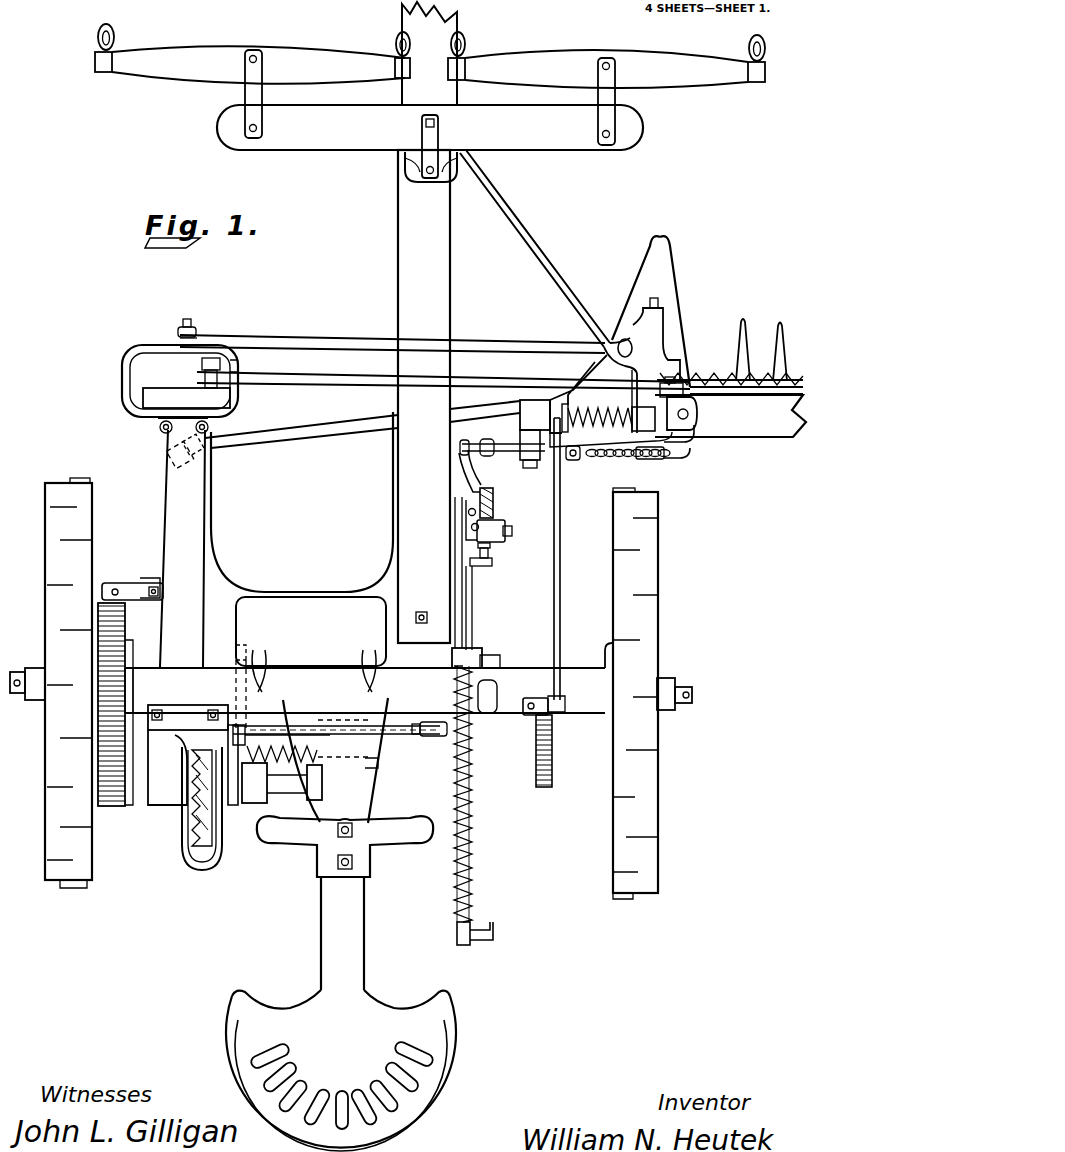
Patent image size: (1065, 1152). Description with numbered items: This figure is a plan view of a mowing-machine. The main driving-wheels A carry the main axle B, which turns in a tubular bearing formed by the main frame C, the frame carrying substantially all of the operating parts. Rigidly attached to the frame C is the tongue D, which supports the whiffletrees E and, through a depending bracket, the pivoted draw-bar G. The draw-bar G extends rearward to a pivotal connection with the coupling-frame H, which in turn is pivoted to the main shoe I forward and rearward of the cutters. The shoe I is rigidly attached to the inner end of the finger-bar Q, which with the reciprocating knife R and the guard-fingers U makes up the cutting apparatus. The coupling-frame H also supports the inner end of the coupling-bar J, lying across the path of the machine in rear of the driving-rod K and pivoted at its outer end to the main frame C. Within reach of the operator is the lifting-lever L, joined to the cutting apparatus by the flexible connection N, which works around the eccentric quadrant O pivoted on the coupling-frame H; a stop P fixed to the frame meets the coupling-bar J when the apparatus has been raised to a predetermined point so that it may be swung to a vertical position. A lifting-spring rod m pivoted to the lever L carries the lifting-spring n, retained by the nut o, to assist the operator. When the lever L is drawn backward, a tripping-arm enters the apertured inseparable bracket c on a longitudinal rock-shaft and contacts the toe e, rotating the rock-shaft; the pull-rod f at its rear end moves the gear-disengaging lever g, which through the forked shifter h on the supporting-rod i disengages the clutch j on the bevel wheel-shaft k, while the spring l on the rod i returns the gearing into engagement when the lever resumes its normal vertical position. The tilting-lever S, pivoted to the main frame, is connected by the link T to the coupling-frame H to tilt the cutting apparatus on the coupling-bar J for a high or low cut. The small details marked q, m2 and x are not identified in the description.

The whiffletrees E is at (430, 101).
The tongue D is at (424, 396).
The draw-bar G is at (530, 243).
The main shoe I is at (638, 276).
The coupling-frame H is at (580, 400).
The finger-bar Q is at (735, 432).
The reciprocating knife R is at (727, 376).
The guard-fingers U is at (749, 326).
The flexible connection N is at (608, 458).
The chain link q is at (622, 458).
The chain clamp m2 is at (650, 459).
The stop P is at (680, 452).
The eccentric quadrant O is at (518, 454).
The driving-rod K is at (330, 375).
The coupling-bar J is at (353, 428).
The main driving-wheels A is at (351, 688).
The main axle B is at (24, 672).
The main frame C is at (369, 678).
The clutch j is at (225, 796).
The forked shifter h is at (235, 790).
The bevel wheel-shaft k is at (270, 788).
The spring l is at (272, 765).
The gear-disengaging lever g is at (240, 726).
The pull-rod f is at (414, 729).
The stop x is at (382, 760).
The lifting-lever L is at (495, 507).
The toe e is at (489, 553).
The supporting-rod i is at (486, 562).
The apertured inseparable bracket c is at (474, 570).
The lifting-spring rod m is at (460, 646).
The lifting-spring n is at (474, 856).
The nut o is at (496, 930).
The link T is at (560, 586).
The tilting-lever S is at (553, 746).